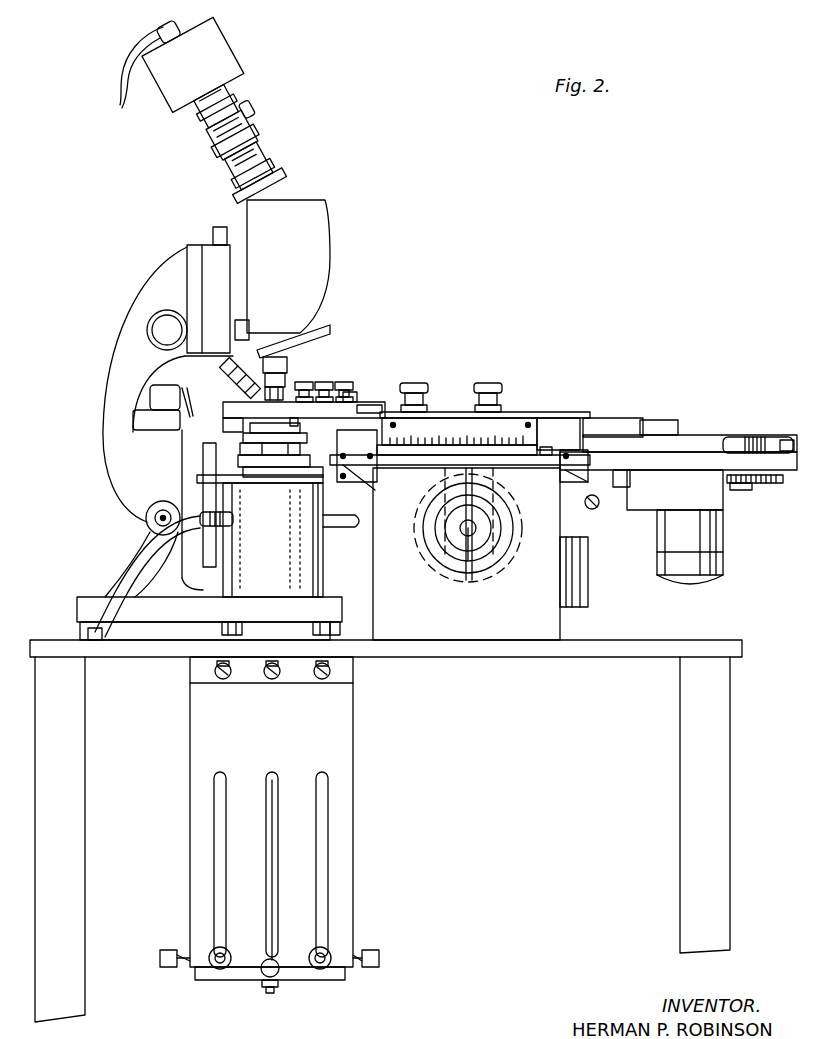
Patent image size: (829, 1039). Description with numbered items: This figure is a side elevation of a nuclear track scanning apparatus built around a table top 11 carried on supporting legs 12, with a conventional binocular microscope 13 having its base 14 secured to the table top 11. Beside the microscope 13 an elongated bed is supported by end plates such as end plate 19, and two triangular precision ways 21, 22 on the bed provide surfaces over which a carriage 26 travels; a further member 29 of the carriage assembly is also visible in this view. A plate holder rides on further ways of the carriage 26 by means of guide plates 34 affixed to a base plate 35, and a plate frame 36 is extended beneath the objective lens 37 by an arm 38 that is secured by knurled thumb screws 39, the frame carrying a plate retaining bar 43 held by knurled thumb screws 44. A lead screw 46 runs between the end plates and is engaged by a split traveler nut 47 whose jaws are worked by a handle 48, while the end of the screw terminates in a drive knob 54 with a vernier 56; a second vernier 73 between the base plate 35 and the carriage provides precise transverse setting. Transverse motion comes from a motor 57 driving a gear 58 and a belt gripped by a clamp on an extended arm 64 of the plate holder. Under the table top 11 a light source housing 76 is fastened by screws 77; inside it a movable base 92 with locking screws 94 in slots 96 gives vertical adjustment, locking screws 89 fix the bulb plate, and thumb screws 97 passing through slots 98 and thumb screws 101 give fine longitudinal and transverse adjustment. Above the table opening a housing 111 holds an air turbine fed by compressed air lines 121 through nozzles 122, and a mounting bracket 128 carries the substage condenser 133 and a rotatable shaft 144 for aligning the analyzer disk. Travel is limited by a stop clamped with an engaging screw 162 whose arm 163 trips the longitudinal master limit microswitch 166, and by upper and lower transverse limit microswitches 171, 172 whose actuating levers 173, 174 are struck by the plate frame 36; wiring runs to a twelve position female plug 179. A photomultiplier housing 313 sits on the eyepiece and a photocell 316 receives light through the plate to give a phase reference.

The table top 11 is at (600, 654).
The supporting legs 12 is at (85, 845).
The binocular microscope 13 is at (105, 355).
The base 14 is at (180, 612).
The end plate 19 is at (500, 624).
The precision way 21 is at (365, 474).
The precision way 22 is at (561, 472).
The carriage 26 is at (690, 433).
The support bar 29 is at (598, 466).
The guide plates 34 is at (360, 422).
The base plate 35 is at (546, 420).
The plate frame 36 is at (246, 410).
The objective lens 37 is at (290, 380).
The arm 38 is at (440, 412).
The knurled thumb screws 39 is at (490, 383).
The plate retaining bar 43 is at (355, 398).
The knurled thumb screws 44 is at (355, 390).
The lead screw 46 is at (440, 538).
The split traveler nut 47 is at (418, 506).
The handle 48 is at (748, 438).
The drive knob 54 is at (474, 553).
The vernier 56 is at (508, 545).
The motor 57 is at (726, 544).
The gear 58 is at (772, 484).
The extended arm 64 is at (660, 422).
The vernier 73 is at (553, 430).
The light source housing 76 is at (352, 752).
The screws 77 is at (270, 680).
The locking screws 89 is at (277, 992).
The movable base 92 is at (328, 980).
The locking screws 94 is at (213, 950).
The slots 96 is at (218, 803).
The thumb screws 97 is at (264, 974).
The slots 98 is at (272, 874).
The thumb screws 101 is at (163, 965).
The housing 111 is at (312, 580).
The compressed air lines 121 is at (75, 632).
The nozzles 122 is at (240, 527).
The mounting bracket 128 is at (215, 447).
The substage condenser 133 is at (250, 455).
The rotatable shaft 144 is at (200, 482).
The engaging screw 162 is at (594, 509).
The arm 163 is at (628, 490).
The longitudinal master limit microswitch 166 is at (648, 478).
The upper transverse limit microswitch 171 is at (143, 423).
The lower transverse limit microswitch 172 is at (152, 400).
The actuating lever 173 is at (220, 436).
The actuating lever 174 is at (184, 388).
The twelve position female plug 179 is at (590, 592).
The housing 313 is at (218, 45).
The photocell 316 is at (224, 376).